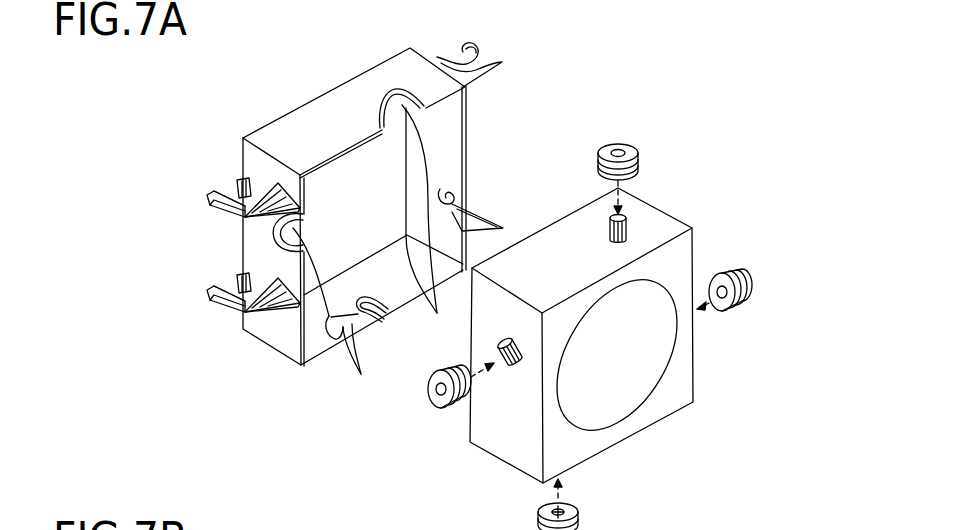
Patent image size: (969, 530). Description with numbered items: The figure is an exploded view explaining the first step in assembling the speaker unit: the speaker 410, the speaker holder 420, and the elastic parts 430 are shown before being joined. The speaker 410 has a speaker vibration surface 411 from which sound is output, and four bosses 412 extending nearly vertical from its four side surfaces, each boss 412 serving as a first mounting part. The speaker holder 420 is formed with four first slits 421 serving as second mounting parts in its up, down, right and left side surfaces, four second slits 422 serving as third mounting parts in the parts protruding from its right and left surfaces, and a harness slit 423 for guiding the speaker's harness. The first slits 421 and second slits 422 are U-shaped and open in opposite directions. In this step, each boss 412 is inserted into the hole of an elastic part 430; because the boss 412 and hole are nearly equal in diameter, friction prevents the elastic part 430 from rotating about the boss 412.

The speaker 410 is at (546, 226).
The speaker vibration surface 411 is at (668, 350).
The boss 412 is at (611, 216).
The speaker holder 420 is at (302, 100).
The first slit 421 is at (437, 313).
The second slit 422 is at (458, 55).
The harness slit 423 is at (381, 320).
The elastic part 430 is at (626, 147).